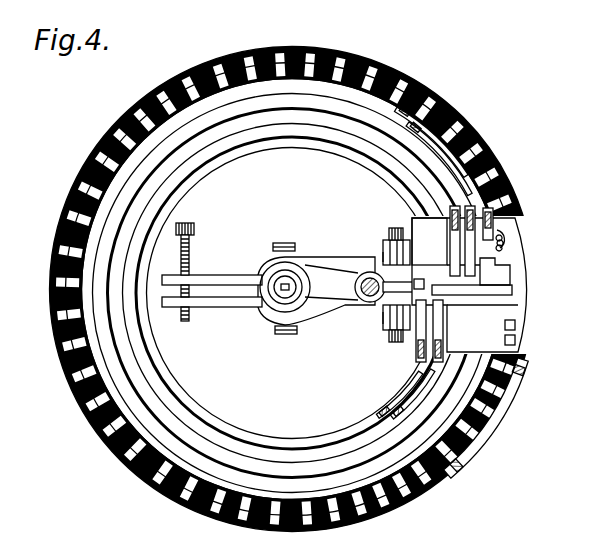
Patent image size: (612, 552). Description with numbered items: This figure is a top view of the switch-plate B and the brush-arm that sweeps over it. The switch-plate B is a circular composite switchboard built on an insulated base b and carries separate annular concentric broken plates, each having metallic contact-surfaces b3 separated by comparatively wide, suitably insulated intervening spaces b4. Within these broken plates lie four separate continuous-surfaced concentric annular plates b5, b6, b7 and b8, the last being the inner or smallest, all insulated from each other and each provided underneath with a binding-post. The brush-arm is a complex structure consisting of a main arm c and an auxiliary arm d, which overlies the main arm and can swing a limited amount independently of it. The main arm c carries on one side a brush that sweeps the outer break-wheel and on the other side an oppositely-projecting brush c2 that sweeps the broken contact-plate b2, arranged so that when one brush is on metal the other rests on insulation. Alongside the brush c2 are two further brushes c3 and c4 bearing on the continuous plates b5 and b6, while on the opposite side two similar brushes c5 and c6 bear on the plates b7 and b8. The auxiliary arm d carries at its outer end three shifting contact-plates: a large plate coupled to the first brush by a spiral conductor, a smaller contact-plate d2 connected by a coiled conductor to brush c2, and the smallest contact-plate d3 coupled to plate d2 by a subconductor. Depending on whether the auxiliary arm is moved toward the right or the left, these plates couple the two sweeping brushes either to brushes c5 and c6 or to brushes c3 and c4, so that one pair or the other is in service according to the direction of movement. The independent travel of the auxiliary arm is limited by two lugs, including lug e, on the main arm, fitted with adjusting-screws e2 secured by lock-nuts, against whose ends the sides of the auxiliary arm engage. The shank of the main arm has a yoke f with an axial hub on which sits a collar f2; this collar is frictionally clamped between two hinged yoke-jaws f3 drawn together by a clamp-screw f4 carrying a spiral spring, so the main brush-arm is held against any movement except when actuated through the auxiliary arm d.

The switch-plate B is at (255, 289).
The insulated base b is at (292, 293).
The broken contact-plate b2 is at (85, 190).
The contact-surfaces b3 is at (92, 160).
The intervening spaces b4 is at (118, 118).
The annular continuous-surfaced plate b5 is at (222, 95).
The annular continuous-surfaced plate b6 is at (252, 100).
The annular continuous-surfaced plate b7 is at (278, 118).
The annular continuous-surfaced plate b8 is at (300, 130).
The main arm c is at (328, 262).
The brush c2 is at (455, 185).
The brush c3 is at (478, 195).
The brush c4 is at (490, 190).
The brush c5 is at (424, 392).
The brush c6 is at (390, 410).
The auxiliary arm d is at (384, 288).
The smaller contact-plate d2 is at (492, 276).
The smallest contact-plate d3 is at (424, 276).
The lug e is at (385, 250).
The adjusting-screws e2 is at (386, 284).
The yoke f is at (285, 243).
The collar f2 is at (306, 262).
The yoke-jaws f3 is at (215, 276).
The clamp-screw f4 is at (183, 228).